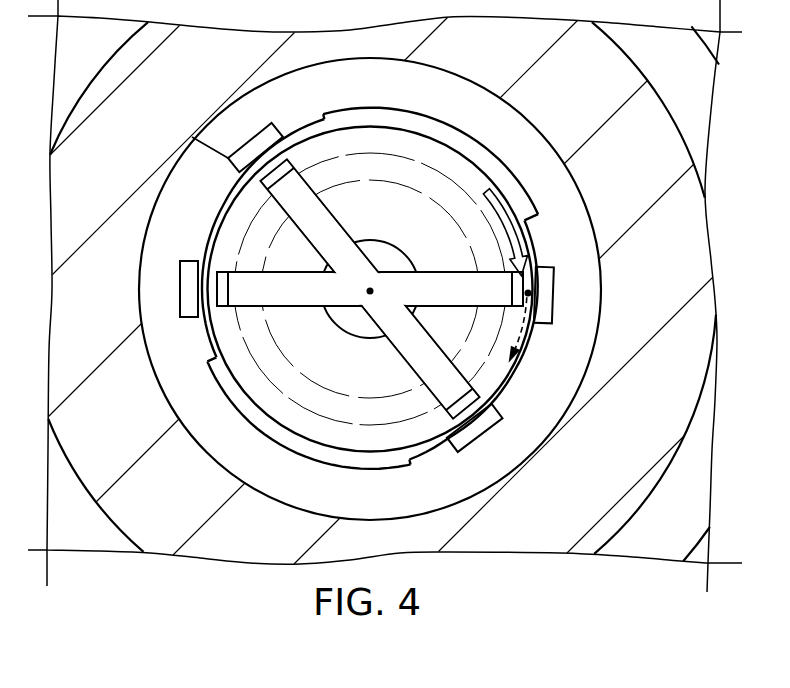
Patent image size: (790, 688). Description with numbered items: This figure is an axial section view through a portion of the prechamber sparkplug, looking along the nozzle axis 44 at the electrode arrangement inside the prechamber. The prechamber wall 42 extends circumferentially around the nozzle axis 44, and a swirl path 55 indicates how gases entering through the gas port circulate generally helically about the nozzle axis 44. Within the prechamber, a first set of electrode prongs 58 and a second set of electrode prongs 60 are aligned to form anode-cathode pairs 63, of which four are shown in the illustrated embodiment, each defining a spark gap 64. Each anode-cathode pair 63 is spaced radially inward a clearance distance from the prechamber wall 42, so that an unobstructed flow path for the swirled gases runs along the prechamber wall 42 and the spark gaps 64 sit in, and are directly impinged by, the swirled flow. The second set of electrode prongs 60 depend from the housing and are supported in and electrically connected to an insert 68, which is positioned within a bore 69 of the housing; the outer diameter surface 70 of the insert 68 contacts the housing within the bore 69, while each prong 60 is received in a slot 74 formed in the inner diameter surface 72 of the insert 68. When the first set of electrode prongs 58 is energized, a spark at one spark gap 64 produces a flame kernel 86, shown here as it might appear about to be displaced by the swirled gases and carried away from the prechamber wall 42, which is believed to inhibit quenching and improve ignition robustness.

The prechamber wall 42 is at (590, 338).
The nozzle axis 44 is at (372, 308).
The swirl path 55 is at (507, 200).
The first set of electrode prongs 58 is at (283, 173).
The second set of electrode prongs 60 is at (252, 148).
The anode-cathode pairs 63 is at (290, 118).
The spark gaps 64 is at (250, 177).
The insert 68 is at (525, 140).
The bore 69 is at (560, 392).
The outer diameter surface 70 is at (570, 172).
The inner diameter surface 72 is at (467, 137).
The slot 74 is at (192, 137).
The flame kernel 86 is at (545, 287).